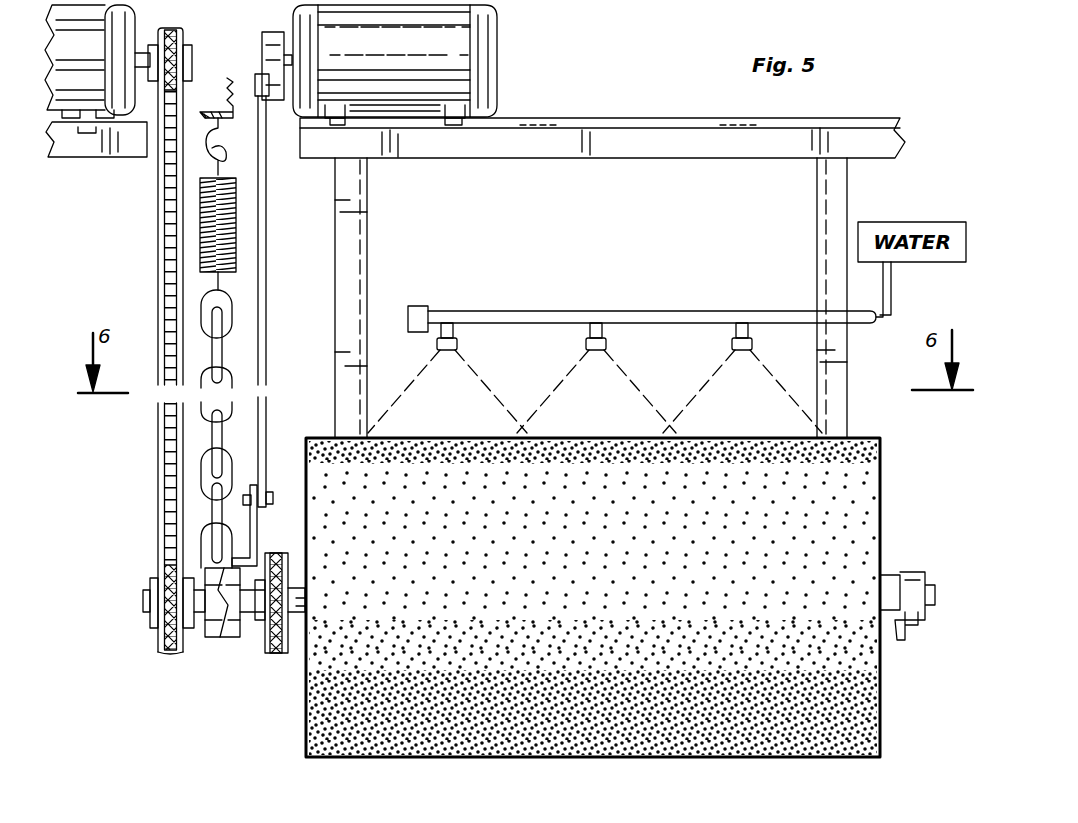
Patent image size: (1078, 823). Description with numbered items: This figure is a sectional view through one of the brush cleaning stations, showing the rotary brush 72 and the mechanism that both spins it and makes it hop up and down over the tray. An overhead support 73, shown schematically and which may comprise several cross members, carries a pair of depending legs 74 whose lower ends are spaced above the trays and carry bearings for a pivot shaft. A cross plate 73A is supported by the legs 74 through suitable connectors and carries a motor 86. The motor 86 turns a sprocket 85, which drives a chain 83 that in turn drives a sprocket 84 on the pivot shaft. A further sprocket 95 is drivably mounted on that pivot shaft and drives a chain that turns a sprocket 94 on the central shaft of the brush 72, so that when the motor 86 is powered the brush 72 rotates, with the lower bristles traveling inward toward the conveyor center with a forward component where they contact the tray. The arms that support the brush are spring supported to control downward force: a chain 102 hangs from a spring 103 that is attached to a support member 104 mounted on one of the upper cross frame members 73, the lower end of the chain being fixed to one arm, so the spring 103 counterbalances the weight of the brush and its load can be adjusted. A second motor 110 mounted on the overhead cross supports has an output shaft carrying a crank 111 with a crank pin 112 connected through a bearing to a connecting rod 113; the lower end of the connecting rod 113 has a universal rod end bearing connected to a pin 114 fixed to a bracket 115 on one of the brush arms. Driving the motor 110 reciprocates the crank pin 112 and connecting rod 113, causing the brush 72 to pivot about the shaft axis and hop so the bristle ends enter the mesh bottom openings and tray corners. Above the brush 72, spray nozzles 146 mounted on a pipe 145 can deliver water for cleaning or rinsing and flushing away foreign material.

The motor 86 is at (100, 58).
The cross plate 73A is at (84, 152).
The sprocket 85 is at (189, 42).
The chain 83 is at (160, 470).
The sprocket 84 is at (158, 614).
The support member 104 is at (234, 82).
The spring 103 is at (240, 240).
The chain 102 is at (233, 312).
The crank 111 is at (272, 30).
The crank pin 112 is at (257, 86).
The connecting rod 113 is at (267, 203).
The pin 114 is at (277, 500).
The bracket 115 is at (258, 528).
The sprocket 94 is at (295, 625).
The motor 110 is at (497, 70).
The overhead support 73 is at (652, 118).
The depending legs 74 is at (368, 243).
The pipe 145 is at (517, 320).
The spray nozzles 146 is at (458, 343).
The rotary brush 72 is at (652, 722).
The sprocket 95 is at (349, 813).